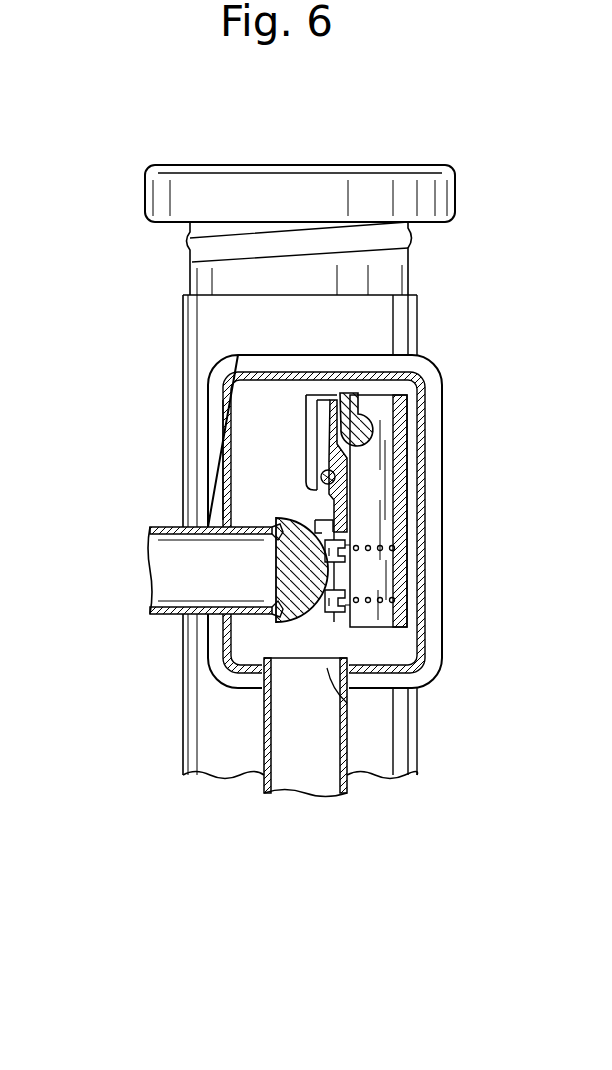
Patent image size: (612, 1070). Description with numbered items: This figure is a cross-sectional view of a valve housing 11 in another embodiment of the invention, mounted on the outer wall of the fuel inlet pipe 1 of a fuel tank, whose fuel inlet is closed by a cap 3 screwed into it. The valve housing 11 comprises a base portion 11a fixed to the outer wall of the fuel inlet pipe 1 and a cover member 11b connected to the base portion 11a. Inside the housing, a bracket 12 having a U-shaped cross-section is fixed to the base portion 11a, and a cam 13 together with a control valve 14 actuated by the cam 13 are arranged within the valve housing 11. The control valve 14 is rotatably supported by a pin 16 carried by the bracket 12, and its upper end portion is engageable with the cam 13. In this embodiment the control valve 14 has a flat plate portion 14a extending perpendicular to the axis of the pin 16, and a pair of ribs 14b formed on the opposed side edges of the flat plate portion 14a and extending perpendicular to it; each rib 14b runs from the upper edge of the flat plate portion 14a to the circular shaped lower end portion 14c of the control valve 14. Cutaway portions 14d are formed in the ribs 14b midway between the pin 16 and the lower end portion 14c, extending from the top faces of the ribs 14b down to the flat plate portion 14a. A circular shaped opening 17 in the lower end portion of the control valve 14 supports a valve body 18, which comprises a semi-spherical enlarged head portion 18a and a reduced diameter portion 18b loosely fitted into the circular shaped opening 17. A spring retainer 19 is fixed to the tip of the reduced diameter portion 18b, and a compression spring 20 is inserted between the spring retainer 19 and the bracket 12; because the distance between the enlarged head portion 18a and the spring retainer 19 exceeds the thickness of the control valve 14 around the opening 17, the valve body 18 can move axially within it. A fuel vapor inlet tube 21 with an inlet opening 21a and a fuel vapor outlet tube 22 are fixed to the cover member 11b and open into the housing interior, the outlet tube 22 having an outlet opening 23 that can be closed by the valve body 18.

The fuel inlet pipe 1 is at (418, 328).
The cap 3 is at (371, 183).
The valve housing 11 is at (443, 411).
The base portion 11a is at (235, 450).
The cover member 11b is at (427, 560).
The bracket 12 is at (404, 483).
The cam 13 is at (352, 395).
The control valve 14 is at (349, 462).
The flat plate portion 14a is at (330, 413).
The ribs 14b is at (318, 435).
The circular shaped lower end portion 14c is at (330, 617).
The cutaway portions 14d is at (320, 512).
The pin 16 is at (320, 475).
The circular shaped opening 17 is at (318, 600).
The valve body 18 is at (292, 619).
The enlarged head portion 18a is at (262, 582).
The reduced diameter portion 18b is at (287, 523).
The spring retainer 19 is at (340, 614).
The compression spring 20 is at (375, 618).
The fuel vapor inlet tube 21 is at (262, 790).
The inlet opening 21a is at (347, 703).
The fuel vapor outlet tube 22 is at (158, 527).
The outlet opening 23 is at (262, 553).